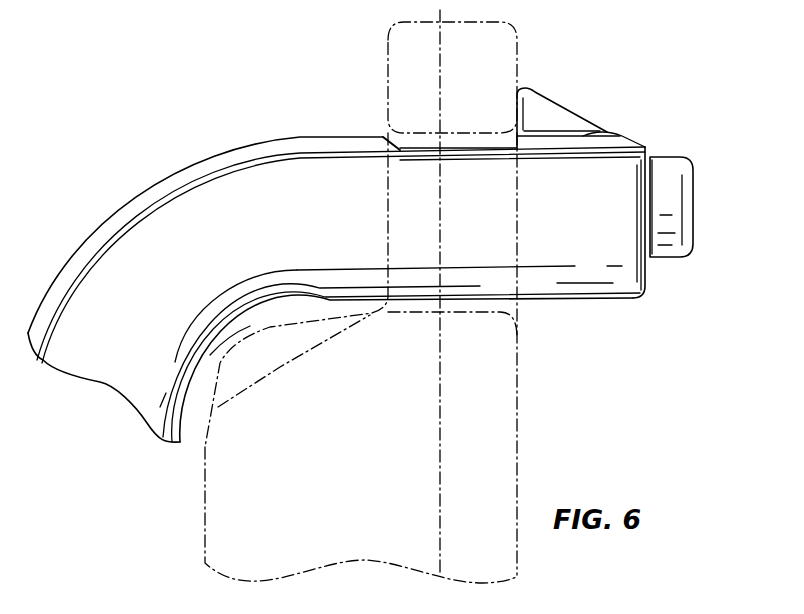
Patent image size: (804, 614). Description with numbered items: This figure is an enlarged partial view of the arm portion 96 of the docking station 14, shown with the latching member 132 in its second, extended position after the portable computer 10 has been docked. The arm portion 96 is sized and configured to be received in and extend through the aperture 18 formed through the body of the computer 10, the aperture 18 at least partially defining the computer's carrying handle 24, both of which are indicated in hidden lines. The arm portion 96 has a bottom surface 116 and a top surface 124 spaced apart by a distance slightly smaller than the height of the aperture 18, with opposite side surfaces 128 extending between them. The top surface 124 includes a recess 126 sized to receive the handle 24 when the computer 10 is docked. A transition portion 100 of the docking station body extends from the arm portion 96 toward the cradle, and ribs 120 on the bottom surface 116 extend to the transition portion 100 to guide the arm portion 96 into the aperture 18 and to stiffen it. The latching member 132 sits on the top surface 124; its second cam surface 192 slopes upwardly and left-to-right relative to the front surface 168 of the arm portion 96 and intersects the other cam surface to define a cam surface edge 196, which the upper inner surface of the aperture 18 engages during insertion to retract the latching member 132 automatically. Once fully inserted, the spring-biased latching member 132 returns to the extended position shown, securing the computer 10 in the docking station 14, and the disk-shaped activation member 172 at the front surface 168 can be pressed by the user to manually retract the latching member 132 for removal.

The portable computer 10 is at (520, 465).
The docking station 14 is at (98, 176).
The aperture 18 is at (500, 312).
The carrying handle 24 is at (513, 35).
The arm portion 96 is at (288, 205).
The transition portion 100 is at (188, 424).
The bottom surface 116 is at (595, 298).
The ribs 120 is at (245, 320).
The top surface 124 is at (353, 137).
The recess 126 is at (417, 135).
The side surfaces 128 is at (588, 222).
The latching member 132 is at (533, 87).
The front surface 168 is at (648, 272).
The activation member 172 is at (685, 198).
The second cam surface 192 is at (570, 120).
The cam surface edge 196 is at (563, 103).